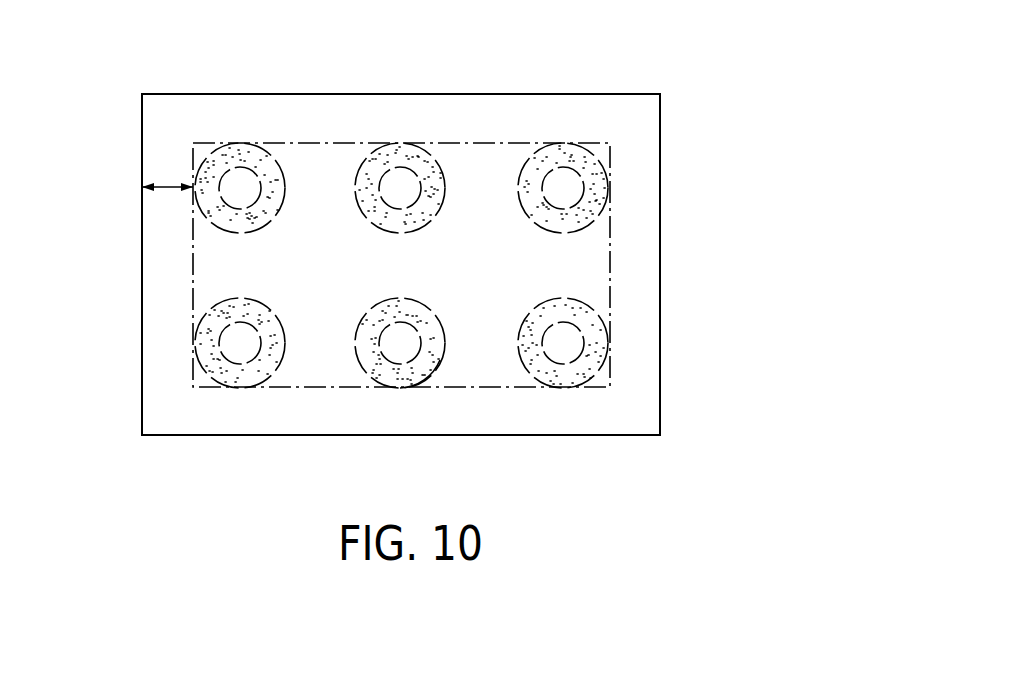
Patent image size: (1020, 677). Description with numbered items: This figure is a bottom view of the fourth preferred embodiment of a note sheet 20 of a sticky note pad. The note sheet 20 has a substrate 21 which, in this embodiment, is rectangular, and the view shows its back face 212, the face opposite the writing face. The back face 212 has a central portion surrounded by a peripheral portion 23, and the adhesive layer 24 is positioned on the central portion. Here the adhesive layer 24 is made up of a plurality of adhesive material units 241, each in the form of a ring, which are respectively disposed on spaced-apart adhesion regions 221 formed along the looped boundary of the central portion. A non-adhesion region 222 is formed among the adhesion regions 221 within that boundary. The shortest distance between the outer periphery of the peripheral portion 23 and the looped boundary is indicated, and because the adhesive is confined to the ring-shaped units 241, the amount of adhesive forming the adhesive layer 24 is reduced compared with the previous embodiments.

The note sheet 20 is at (668, 68).
The substrate 21 is at (670, 158).
The back face 212 is at (652, 256).
The peripheral portion 23 is at (147, 385).
The adhesive layer 24 is at (340, 275).
The adhesive material units 241 is at (402, 147).
The non-adhesion region 222 is at (315, 273).
The adhesion regions 221 is at (425, 385).